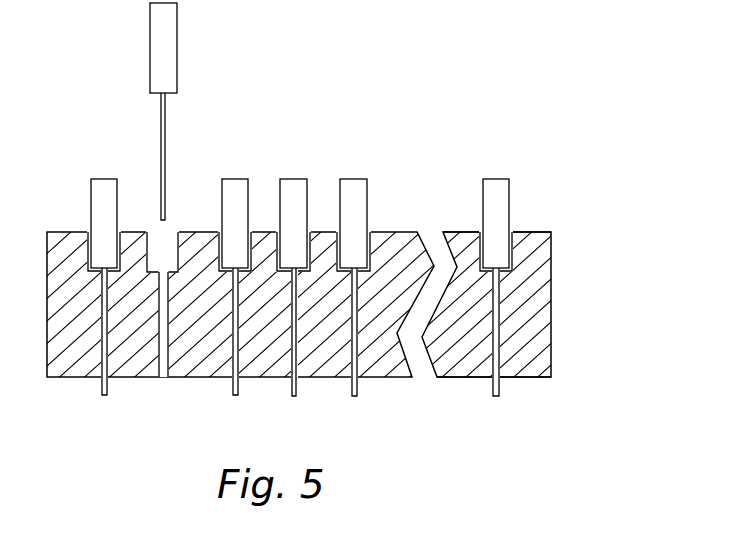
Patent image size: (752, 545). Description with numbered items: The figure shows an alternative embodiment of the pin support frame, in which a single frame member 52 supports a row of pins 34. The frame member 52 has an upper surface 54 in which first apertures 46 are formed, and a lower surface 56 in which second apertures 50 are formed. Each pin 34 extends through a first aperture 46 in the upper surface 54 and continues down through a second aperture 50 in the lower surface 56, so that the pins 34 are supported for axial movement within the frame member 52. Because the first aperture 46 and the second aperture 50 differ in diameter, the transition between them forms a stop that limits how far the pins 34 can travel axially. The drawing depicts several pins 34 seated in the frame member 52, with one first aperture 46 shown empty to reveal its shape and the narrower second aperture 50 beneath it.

The pins 34 is at (280, 209).
The apertures 46 is at (167, 247).
The apertures 50 is at (165, 365).
The frame member 52 is at (551, 302).
The upper surface 54 is at (533, 232).
The lower surface 56 is at (523, 378).